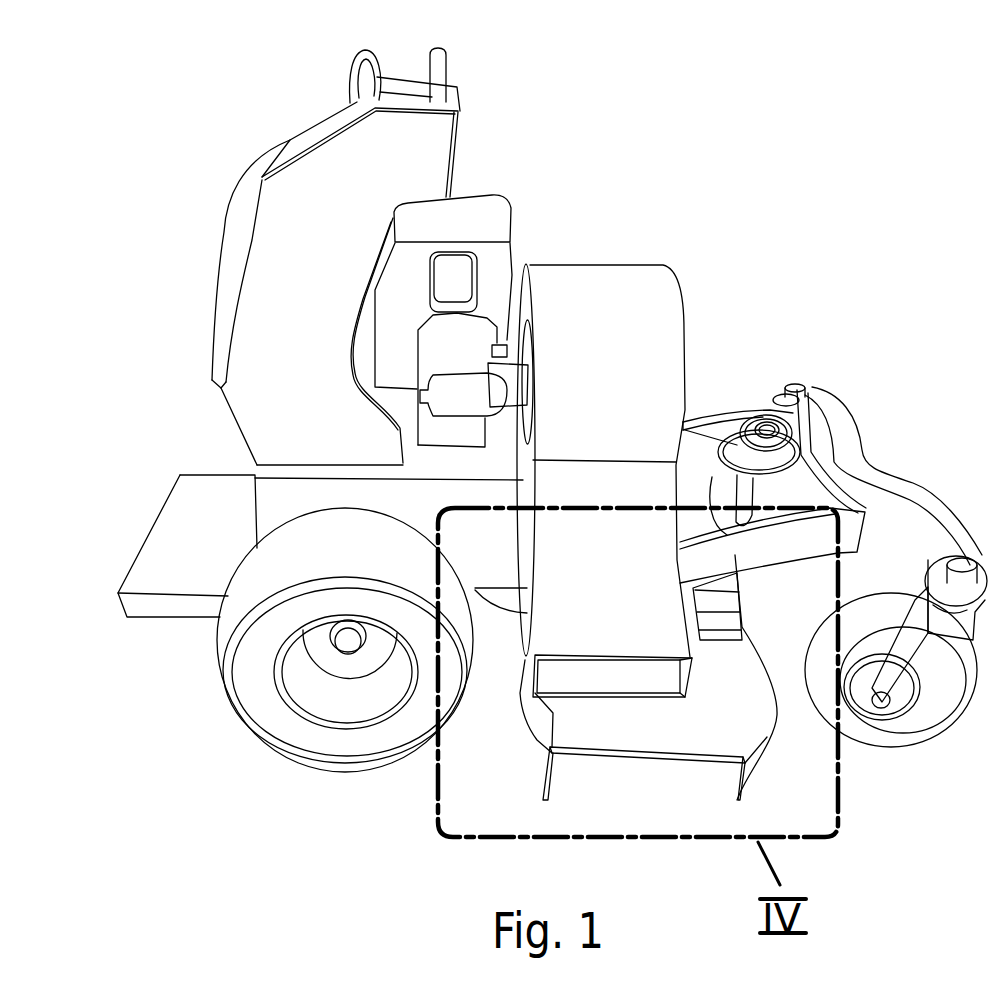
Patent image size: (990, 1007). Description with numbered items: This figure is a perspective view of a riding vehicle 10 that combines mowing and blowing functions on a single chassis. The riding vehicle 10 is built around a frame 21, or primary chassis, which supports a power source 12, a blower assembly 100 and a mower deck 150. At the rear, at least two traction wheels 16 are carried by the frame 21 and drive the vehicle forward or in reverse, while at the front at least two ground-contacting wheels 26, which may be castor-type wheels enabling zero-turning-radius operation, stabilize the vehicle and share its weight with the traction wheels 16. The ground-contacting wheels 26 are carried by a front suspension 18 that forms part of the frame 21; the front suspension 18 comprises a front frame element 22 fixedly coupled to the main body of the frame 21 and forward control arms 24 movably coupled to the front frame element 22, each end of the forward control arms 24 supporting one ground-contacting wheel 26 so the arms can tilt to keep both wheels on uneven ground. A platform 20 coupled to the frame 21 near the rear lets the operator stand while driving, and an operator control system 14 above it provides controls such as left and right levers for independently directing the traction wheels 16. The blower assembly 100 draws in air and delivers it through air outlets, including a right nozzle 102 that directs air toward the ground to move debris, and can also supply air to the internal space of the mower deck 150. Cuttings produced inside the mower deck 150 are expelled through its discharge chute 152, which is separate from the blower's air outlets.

The riding vehicle 10 is at (604, 168).
The power source 12 is at (510, 210).
The operator control system 14 is at (302, 106).
The traction wheels 16 is at (248, 726).
The front suspension 18 is at (877, 418).
The platform 20 is at (200, 482).
The frame 21 is at (498, 587).
The front frame element 22 is at (787, 545).
The forward control arms 24 is at (930, 490).
The ground-contacting wheels 26 is at (707, 483).
The blower assembly 100 is at (684, 325).
The right nozzle 102 is at (692, 677).
The mower deck 150 is at (760, 655).
The discharge chute 152 is at (645, 757).